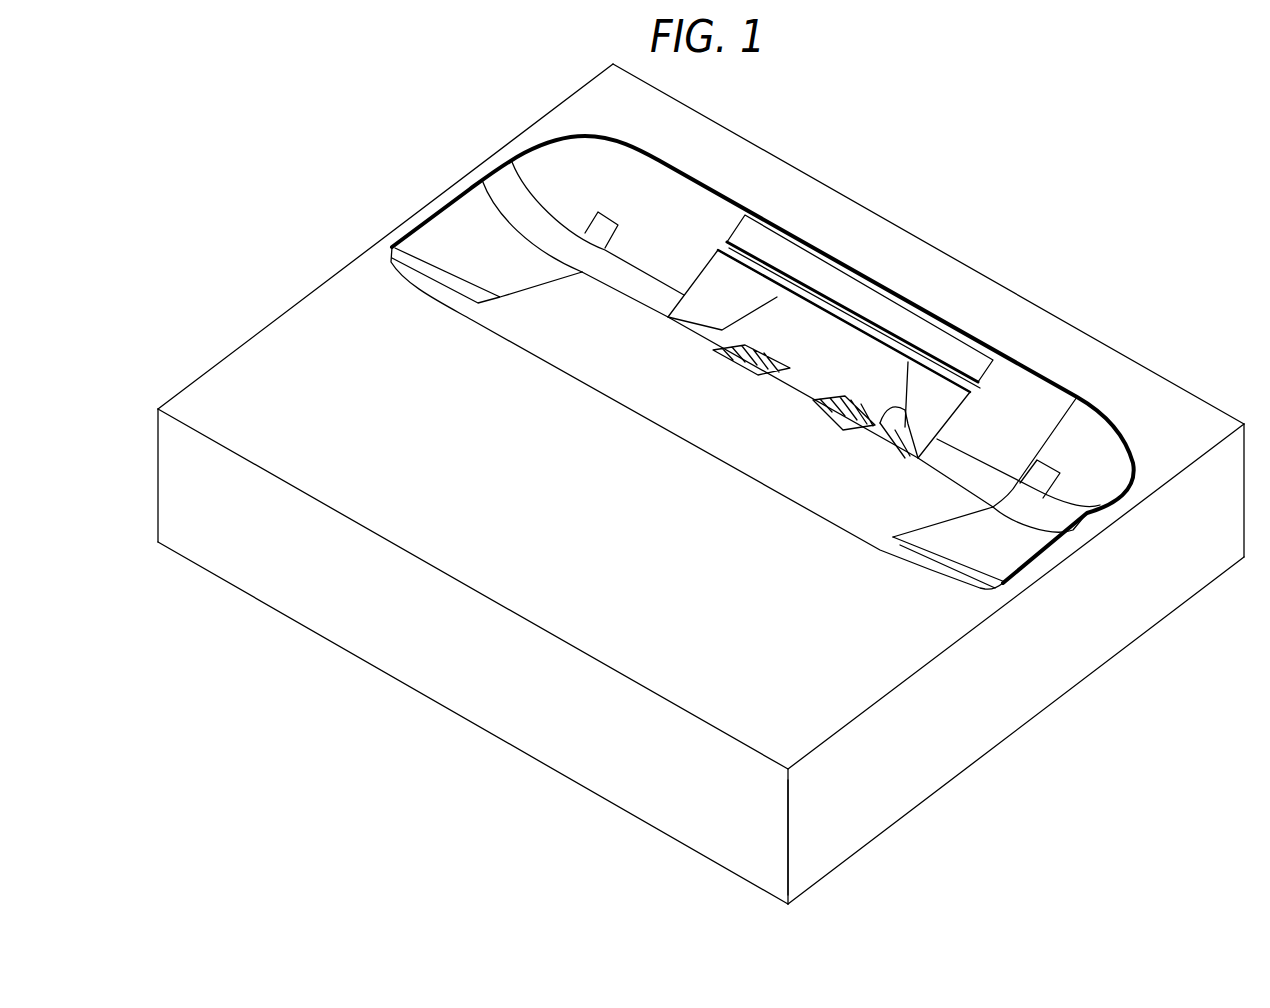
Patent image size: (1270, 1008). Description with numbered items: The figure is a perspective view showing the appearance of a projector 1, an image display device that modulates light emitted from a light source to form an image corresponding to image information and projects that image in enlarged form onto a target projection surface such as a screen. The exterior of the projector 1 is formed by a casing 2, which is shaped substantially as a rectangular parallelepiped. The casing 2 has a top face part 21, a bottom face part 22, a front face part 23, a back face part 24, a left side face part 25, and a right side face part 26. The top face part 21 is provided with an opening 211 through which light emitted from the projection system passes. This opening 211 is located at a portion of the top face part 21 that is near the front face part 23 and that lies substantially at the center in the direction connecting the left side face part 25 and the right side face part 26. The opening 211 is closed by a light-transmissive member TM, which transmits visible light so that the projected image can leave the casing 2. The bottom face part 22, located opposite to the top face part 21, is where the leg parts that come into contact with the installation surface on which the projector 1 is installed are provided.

The projector 1 is at (1151, 121).
The casing 2 is at (757, 143).
The top face part 21 is at (270, 348).
The bottom face part 22 is at (933, 828).
The front face part 23 is at (1108, 299).
The back face part 24 is at (497, 710).
The left side face part 25 is at (1068, 665).
The right side face part 26 is at (338, 211).
The opening 211 is at (888, 418).
The light-transmissive member TM is at (805, 358).